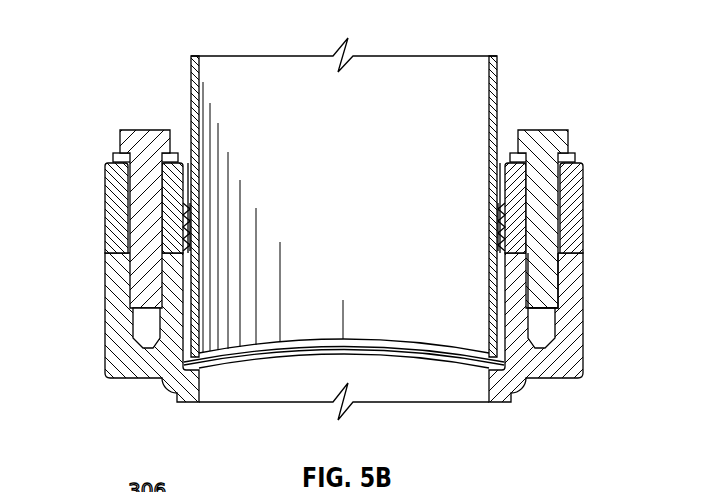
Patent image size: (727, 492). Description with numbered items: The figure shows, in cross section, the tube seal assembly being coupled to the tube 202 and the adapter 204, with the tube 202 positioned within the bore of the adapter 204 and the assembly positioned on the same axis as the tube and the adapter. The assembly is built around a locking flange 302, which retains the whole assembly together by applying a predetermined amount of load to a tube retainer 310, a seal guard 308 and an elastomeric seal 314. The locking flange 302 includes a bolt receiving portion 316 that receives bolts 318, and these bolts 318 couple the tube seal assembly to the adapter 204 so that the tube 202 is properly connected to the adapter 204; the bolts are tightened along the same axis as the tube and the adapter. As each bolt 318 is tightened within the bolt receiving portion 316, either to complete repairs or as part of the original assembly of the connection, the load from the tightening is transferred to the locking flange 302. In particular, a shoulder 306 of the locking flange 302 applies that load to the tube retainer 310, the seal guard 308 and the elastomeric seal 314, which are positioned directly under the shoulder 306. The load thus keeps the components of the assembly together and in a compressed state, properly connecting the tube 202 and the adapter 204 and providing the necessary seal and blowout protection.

The tube 202 is at (295, 71).
The adapter 204 is at (257, 383).
The locking flange 302 is at (515, 175).
The shoulder 306 is at (187, 200).
The seal guard 308 is at (535, 262).
The tube retainer 310 is at (582, 167).
The elastomeric seal 314 is at (548, 262).
The bolt receiving portion 316 is at (135, 278).
The bolts 318 is at (123, 147).